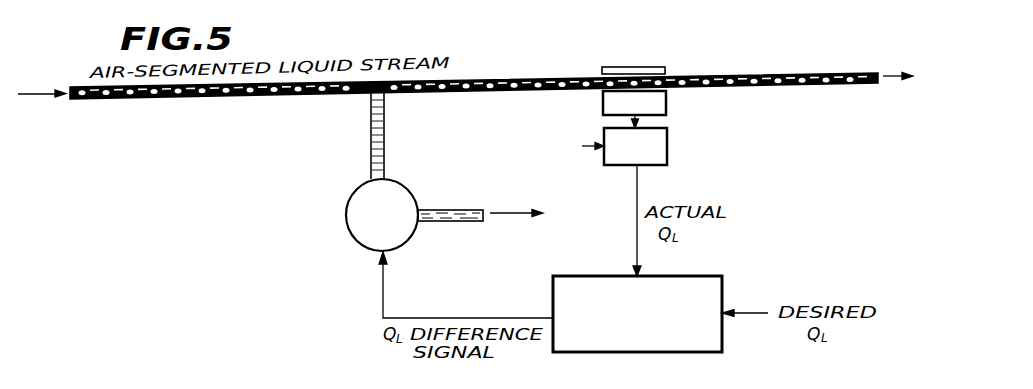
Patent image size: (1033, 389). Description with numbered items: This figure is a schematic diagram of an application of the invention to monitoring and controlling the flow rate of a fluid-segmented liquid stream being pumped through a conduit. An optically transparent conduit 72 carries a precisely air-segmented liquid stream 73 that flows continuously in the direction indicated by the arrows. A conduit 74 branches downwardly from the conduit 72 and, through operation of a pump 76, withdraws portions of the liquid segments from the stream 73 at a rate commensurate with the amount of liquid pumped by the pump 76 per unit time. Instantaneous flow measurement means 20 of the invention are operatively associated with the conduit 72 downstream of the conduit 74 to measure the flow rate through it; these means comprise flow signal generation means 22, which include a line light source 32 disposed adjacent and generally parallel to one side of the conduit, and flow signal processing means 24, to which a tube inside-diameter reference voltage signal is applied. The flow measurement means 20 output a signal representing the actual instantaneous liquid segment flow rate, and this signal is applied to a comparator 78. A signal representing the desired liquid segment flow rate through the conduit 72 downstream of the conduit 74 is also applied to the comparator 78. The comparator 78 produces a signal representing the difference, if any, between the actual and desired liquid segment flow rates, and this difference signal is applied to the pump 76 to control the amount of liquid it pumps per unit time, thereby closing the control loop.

The instantaneous flow measurement means 20 is at (665, 107).
The flow signal generation means 22 is at (664, 102).
The flow signal processing means 24 is at (668, 148).
The line light source 32 is at (636, 58).
The optically transparent conduit 72 is at (212, 97).
The air-segmented liquid stream 73 is at (680, 75).
The branch conduit 74 is at (370, 160).
The pump 76 is at (402, 187).
The comparator 78 is at (647, 354).